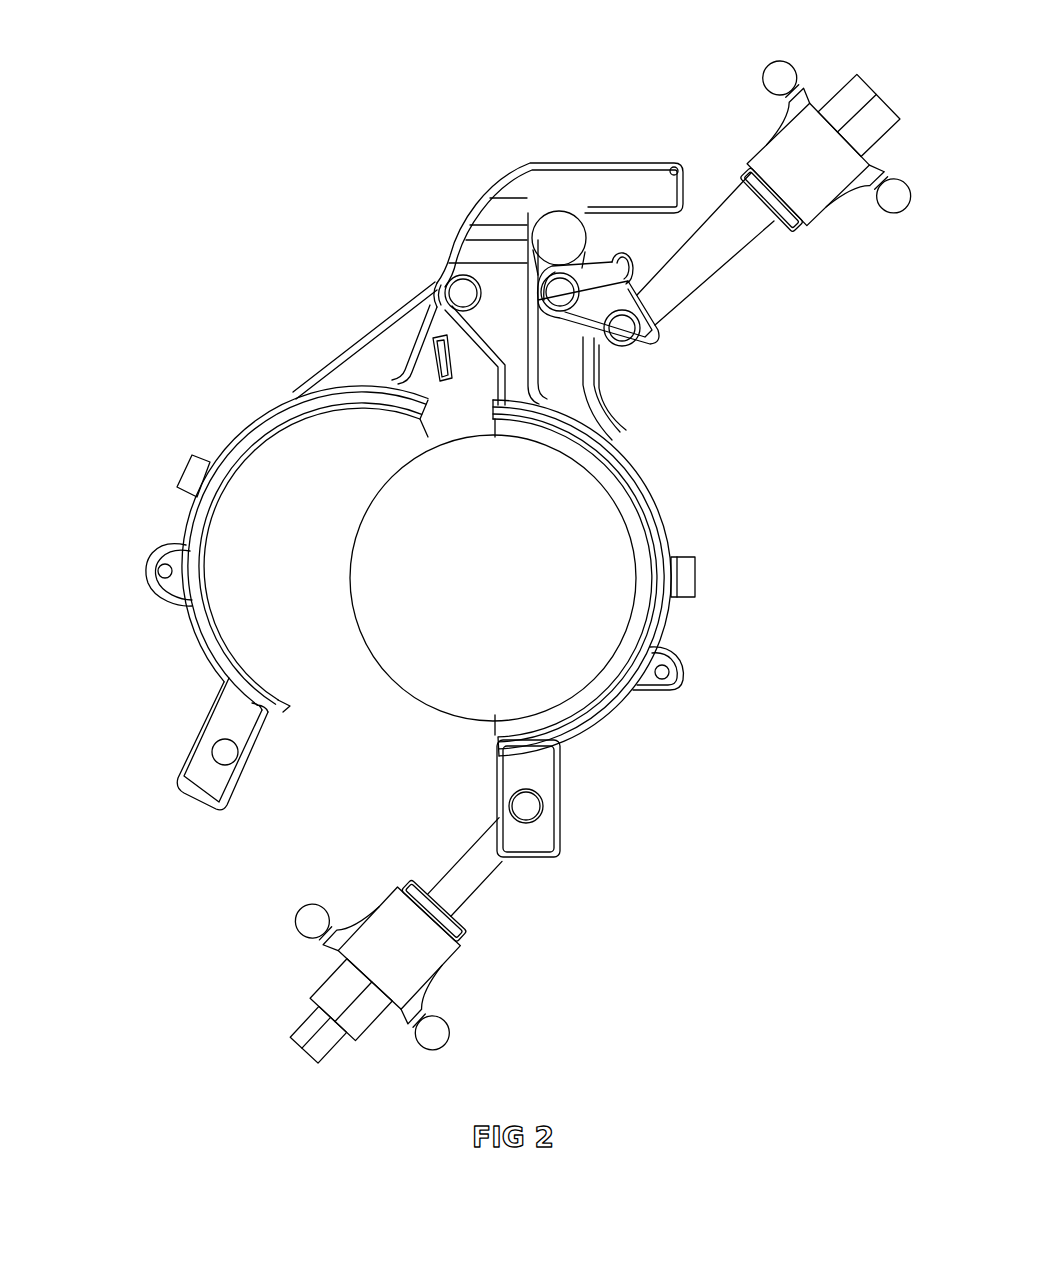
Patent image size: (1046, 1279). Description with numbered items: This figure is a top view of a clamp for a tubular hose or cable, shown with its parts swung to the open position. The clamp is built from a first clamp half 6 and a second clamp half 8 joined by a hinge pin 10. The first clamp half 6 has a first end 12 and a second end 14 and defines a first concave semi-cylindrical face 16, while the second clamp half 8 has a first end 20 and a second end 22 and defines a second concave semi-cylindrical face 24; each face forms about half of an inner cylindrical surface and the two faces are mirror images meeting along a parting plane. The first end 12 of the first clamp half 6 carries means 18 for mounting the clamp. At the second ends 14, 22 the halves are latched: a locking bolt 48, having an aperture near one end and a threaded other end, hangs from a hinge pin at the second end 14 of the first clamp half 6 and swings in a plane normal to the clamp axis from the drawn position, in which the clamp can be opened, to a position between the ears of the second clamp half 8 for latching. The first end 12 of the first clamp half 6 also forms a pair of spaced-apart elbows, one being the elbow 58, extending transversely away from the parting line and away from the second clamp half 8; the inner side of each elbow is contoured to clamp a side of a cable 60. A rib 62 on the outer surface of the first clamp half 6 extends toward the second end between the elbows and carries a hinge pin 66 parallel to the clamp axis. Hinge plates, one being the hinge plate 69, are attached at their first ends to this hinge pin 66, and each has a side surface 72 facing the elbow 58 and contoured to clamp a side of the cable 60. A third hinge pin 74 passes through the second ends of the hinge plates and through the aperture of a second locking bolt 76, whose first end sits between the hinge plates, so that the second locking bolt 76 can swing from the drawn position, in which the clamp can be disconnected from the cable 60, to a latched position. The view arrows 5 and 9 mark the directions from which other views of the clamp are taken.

The section line 5- 5 is at (422, 122).
The first clamp half 6 is at (762, 965).
The second clamp half 8 is at (241, 545).
The section line 9- 9 is at (618, 577).
The hinge pin 10 is at (408, 303).
The first end 12 is at (540, 272).
The second end 14 is at (584, 798).
The first concave semi-cylindrical face 16 is at (561, 567).
The means for mounting the clamp 18 is at (820, 144).
The first end 20 is at (372, 333).
The second end 22 is at (161, 744).
The second concave semi-cylindrical face 24 is at (310, 557).
The locking bolt 48 is at (408, 939).
The elbow 58 is at (490, 145).
The cable 60 is at (602, 169).
The rib 62 is at (691, 392).
The hinge pin 66 is at (549, 142).
The hinge plate 69 is at (709, 331).
The side surface 72 is at (675, 146).
The third hinge pin 74 is at (678, 335).
The second locking bolt 76 is at (755, 249).